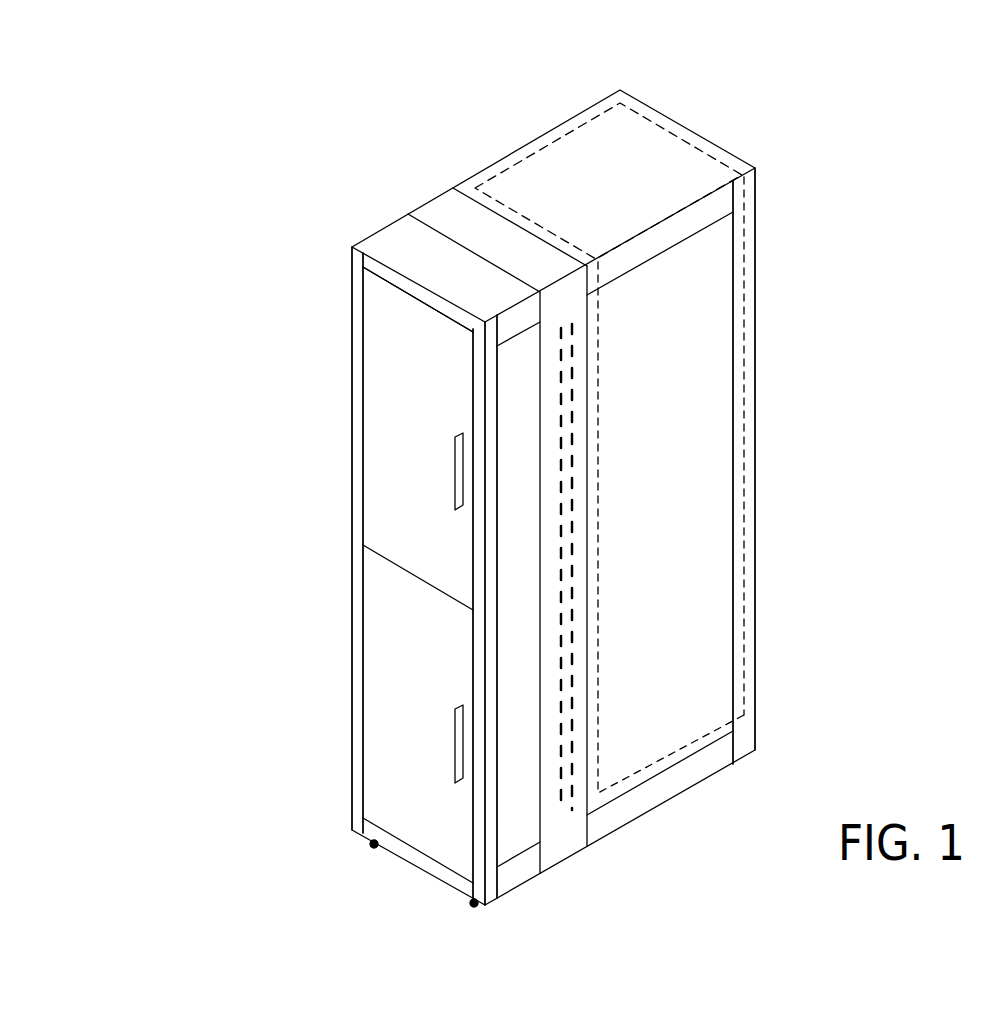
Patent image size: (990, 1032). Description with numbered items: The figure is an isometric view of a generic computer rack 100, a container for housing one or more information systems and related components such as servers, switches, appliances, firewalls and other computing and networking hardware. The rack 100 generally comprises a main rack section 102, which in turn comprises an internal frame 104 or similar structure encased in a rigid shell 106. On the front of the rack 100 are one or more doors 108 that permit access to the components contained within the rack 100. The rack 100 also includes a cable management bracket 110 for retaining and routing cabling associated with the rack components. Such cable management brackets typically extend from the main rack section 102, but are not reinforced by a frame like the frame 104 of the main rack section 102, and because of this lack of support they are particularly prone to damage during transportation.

The computer rack 100 is at (236, 195).
The main rack section 102 is at (855, 160).
The internal frame 104 is at (693, 145).
The rigid shell 106 is at (715, 348).
The doors 108 is at (410, 695).
The cable management bracket 110 is at (552, 772).